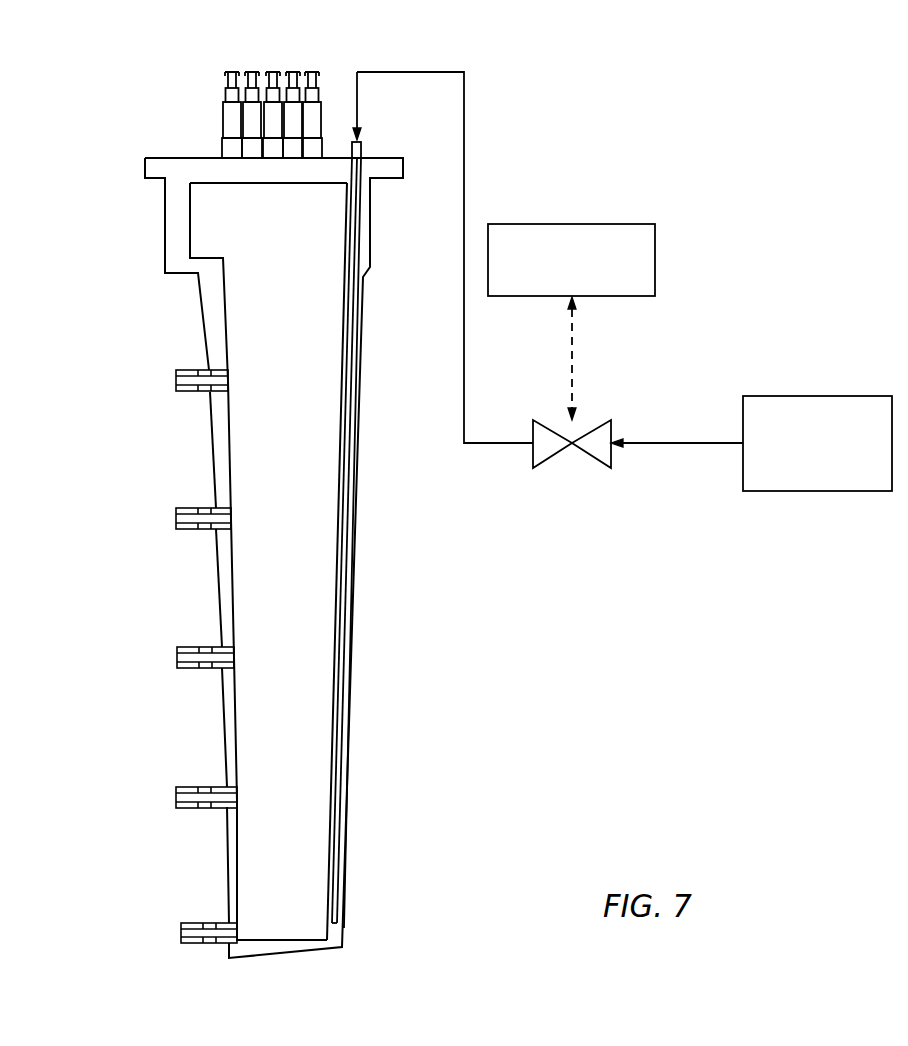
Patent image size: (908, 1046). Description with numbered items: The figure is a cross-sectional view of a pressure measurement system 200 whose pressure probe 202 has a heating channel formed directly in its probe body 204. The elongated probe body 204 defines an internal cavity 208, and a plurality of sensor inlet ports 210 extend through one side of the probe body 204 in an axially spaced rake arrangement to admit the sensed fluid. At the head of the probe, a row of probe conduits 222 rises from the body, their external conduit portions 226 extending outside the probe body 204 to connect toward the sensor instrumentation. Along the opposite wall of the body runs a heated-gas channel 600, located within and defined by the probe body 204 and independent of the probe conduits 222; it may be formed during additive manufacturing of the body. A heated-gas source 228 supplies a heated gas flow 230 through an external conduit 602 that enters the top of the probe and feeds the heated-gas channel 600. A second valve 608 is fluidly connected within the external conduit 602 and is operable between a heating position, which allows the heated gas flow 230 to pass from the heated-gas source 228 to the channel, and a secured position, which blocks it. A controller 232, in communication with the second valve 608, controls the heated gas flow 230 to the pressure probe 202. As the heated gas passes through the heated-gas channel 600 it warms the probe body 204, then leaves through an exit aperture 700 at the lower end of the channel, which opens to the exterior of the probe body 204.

The pressure measurement system 200 is at (598, 627).
The pressure probe 202 is at (377, 460).
The probe body 204 is at (353, 590).
The internal cavity 208 is at (312, 647).
The sensor inlet ports 210 is at (162, 680).
The probe conduits 222 is at (208, 138).
The external conduit portion 226 is at (187, 80).
The heated-gas source 228 is at (858, 395).
The heated gas flow 230 is at (465, 138).
The controller 232 is at (603, 223).
The heated-gas channel 600 is at (342, 282).
The external conduit 602 is at (363, 150).
The second valve 608 is at (595, 427).
The exit aperture 700 is at (348, 923).